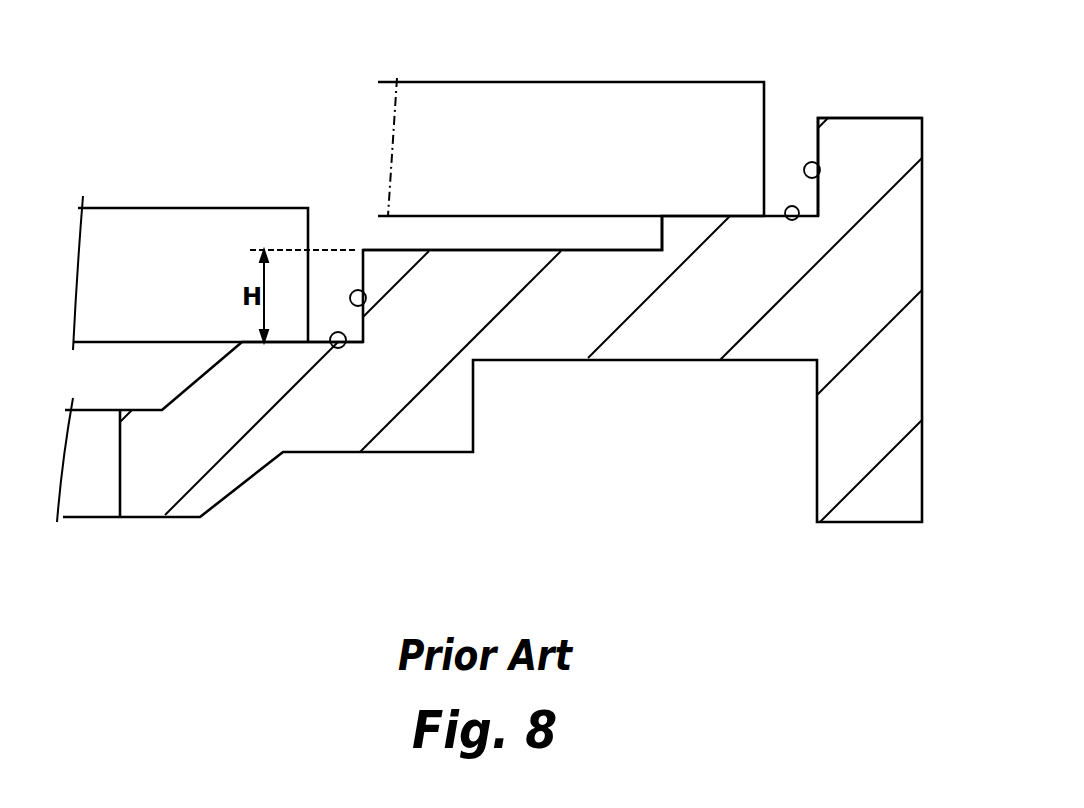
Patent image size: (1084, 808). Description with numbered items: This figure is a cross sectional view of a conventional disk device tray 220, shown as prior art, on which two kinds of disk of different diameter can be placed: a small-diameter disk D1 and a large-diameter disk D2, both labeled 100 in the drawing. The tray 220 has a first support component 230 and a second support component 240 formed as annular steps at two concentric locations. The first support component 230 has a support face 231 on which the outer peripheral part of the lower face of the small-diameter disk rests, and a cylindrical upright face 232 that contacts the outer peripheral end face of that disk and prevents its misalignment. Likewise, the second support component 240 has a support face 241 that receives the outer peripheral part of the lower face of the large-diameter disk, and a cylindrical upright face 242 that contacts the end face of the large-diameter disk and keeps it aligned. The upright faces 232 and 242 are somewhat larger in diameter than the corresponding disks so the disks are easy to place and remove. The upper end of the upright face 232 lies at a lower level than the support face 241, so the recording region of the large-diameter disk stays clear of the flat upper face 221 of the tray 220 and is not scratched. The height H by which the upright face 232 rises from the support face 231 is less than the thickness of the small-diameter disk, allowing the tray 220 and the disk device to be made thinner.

The display device (D1, D2) 100 is at (152, 207).
The tray 220 is at (244, 510).
The flat upper face 221 is at (502, 258).
The first support component 230 is at (348, 230).
The support face 231 is at (348, 352).
The cylindrical upright face 232 is at (366, 306).
The second support component 240 is at (786, 132).
The support face 241 is at (792, 221).
The cylindrical upright face 242 is at (820, 174).